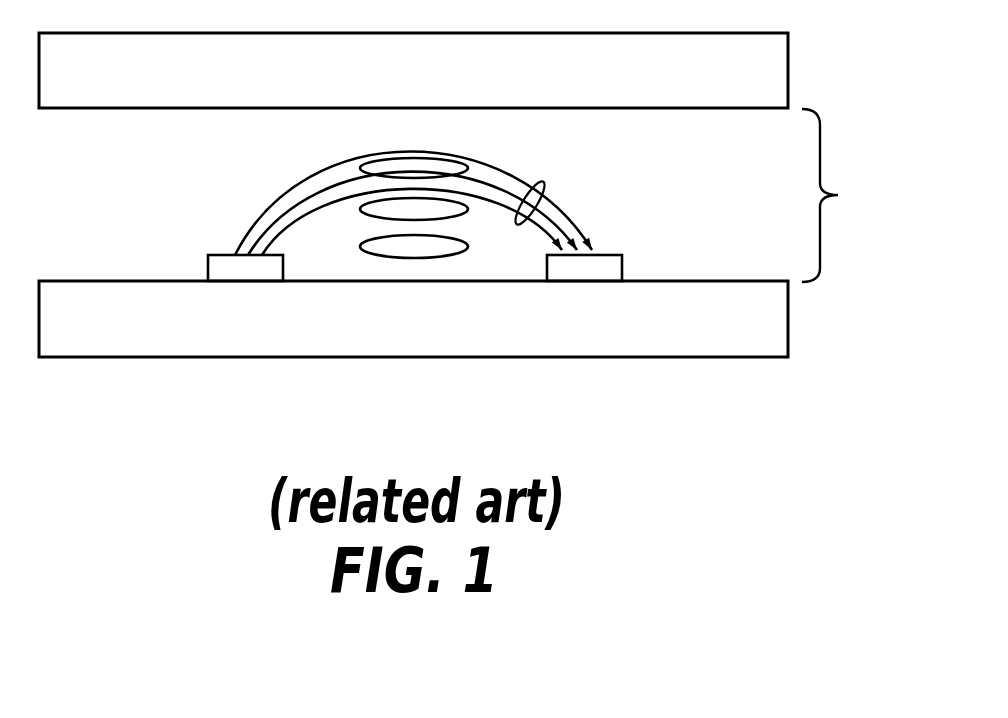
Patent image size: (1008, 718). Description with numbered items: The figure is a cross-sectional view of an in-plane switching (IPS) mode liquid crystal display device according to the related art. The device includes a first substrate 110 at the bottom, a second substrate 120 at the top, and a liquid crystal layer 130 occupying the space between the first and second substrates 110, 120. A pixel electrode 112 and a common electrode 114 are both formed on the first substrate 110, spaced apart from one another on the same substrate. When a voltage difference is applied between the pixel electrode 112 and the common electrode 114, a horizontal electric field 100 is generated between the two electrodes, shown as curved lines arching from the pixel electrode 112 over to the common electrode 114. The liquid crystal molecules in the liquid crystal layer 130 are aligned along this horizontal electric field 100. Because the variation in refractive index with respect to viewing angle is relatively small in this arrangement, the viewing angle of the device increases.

The horizontal electric field 100 is at (545, 184).
The first substrate 110 is at (768, 333).
The pixel electrode 112 is at (240, 272).
The common electrode 114 is at (590, 270).
The second substrate 120 is at (768, 87).
The liquid crystal layer 130 is at (858, 195).